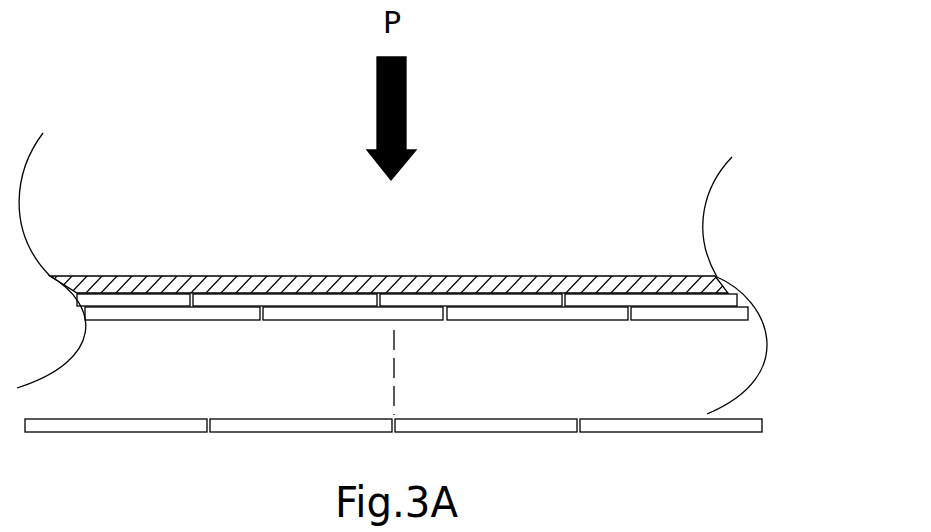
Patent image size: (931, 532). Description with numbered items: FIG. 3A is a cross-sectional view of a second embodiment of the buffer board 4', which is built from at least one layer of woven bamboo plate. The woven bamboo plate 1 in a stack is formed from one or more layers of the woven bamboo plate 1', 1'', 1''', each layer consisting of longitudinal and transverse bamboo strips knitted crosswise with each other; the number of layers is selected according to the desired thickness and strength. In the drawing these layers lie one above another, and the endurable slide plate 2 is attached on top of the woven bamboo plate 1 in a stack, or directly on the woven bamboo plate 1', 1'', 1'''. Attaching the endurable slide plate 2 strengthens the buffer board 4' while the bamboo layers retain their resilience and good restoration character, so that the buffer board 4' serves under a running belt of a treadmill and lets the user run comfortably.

The woven bamboo plate in a stack 1 is at (426, 285).
The endurable slide plate 2 is at (512, 288).
The buffer board 4' is at (320, 208).
The woven bamboo plate 1' is at (393, 388).
The woven bamboo plate 1'' is at (393, 388).
The woven bamboo plate 1''' is at (393, 388).